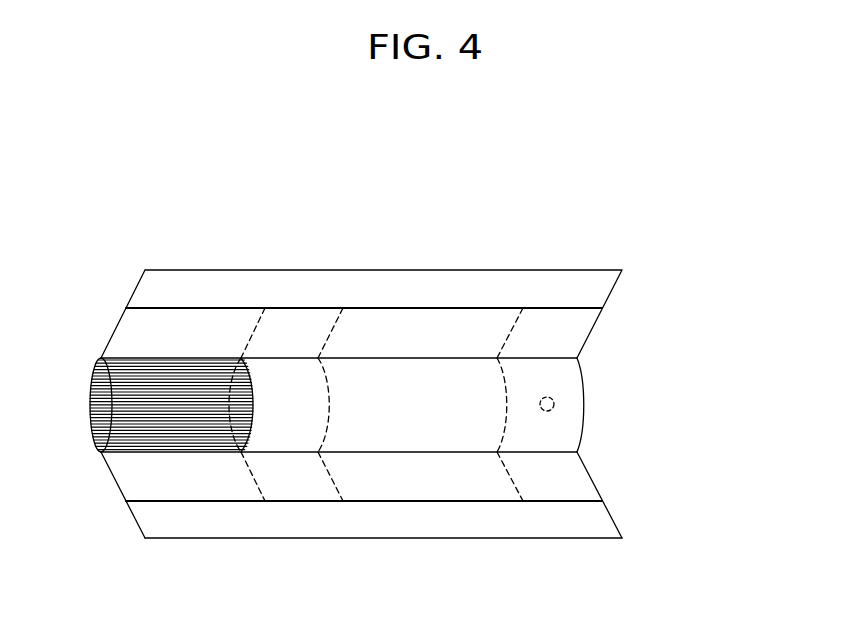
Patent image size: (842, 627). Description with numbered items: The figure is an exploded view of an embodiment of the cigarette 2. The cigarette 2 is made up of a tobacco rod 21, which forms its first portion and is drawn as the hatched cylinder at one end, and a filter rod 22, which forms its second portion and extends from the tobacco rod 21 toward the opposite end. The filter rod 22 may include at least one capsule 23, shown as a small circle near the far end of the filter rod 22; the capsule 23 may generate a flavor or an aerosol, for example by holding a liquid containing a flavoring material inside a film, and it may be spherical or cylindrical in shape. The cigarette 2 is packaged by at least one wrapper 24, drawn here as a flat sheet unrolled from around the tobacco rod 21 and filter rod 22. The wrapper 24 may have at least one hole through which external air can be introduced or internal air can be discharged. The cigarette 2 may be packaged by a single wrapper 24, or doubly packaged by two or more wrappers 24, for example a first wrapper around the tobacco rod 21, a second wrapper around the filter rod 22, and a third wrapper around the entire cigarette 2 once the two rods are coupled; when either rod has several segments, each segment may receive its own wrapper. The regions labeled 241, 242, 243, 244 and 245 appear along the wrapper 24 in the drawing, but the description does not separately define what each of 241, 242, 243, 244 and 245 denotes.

The cigarette 2 is at (607, 242).
The tobacco rod 21 is at (98, 407).
The filter rod 22 is at (398, 373).
The capsule 23 is at (554, 404).
The wrapper 24 is at (580, 447).
The first layer region 241 is at (187, 483).
The second layer region 242 is at (292, 483).
The third layer region 243 is at (427, 483).
The fourth layer region 244 is at (555, 483).
The bottom layer 245 is at (505, 530).